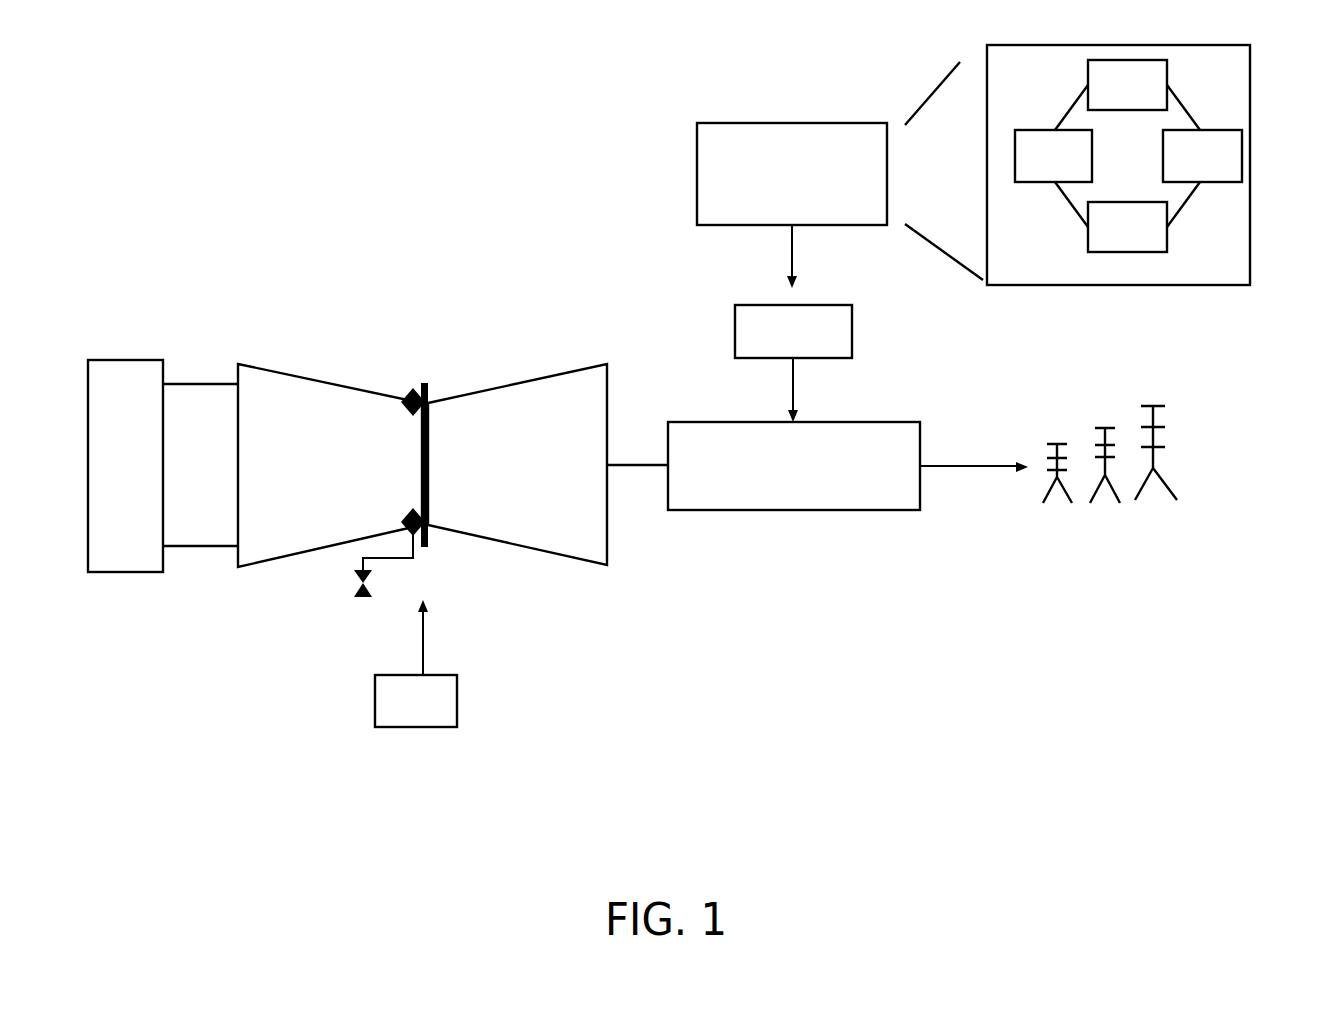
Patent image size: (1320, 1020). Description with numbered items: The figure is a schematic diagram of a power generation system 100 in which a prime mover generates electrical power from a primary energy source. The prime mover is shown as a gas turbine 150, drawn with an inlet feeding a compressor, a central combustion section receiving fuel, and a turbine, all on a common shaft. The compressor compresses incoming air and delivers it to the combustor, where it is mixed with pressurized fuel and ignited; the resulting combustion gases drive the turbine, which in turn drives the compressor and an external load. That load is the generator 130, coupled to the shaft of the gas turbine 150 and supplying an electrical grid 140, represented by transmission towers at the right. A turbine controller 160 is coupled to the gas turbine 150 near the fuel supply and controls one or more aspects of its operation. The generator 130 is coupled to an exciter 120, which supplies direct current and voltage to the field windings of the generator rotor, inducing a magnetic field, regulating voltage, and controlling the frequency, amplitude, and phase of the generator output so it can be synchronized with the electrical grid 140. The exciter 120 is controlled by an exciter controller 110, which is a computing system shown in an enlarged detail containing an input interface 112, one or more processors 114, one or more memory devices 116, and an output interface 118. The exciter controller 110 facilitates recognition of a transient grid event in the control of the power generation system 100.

The power generation system 100 is at (320, 86).
The exciter controller 110 is at (787, 123).
The input interface 112 is at (1127, 60).
The processor 114 is at (1222, 130).
The memory device 116 is at (1165, 225).
The output interface 118 is at (1015, 158).
The exciter 120 is at (852, 330).
The generator 130 is at (878, 422).
The electrical grid 140 is at (1222, 430).
The gas turbine 150 is at (413, 280).
The turbine controller 160 is at (457, 700).